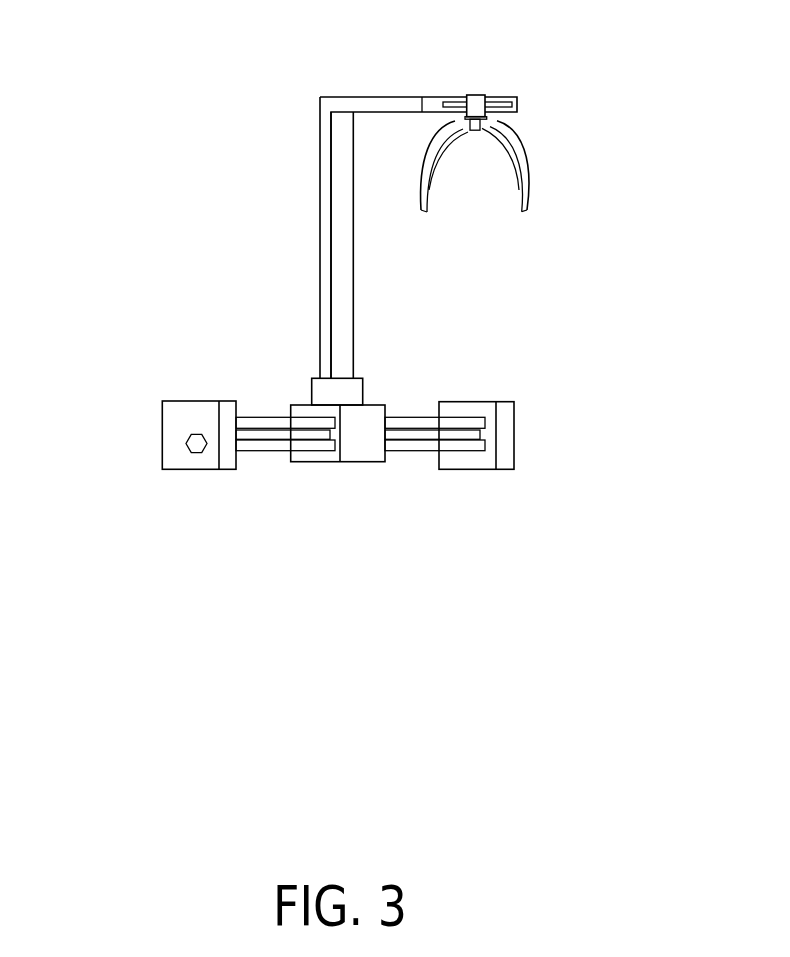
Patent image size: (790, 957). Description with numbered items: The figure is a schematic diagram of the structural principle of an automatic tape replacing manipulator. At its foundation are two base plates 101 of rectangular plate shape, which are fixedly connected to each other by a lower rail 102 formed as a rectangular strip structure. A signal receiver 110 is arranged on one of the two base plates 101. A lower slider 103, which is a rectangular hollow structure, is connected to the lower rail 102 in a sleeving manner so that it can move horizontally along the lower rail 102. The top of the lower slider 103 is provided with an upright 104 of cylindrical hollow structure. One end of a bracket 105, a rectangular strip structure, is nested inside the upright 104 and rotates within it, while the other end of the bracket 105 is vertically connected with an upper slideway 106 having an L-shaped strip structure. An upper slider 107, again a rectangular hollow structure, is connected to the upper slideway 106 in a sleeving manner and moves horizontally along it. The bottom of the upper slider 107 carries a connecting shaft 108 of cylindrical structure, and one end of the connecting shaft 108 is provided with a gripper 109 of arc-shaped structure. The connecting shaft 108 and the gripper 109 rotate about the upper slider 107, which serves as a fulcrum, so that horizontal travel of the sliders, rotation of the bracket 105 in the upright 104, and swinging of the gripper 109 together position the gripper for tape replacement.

The base plate 101 is at (174, 431).
The lower rail 102 is at (418, 423).
The lower slider 103 is at (373, 422).
The upright 104 is at (325, 392).
The bracket 105 is at (342, 313).
The upper slideway 106 is at (343, 111).
The upper slider 107 is at (477, 105).
The connecting shaft 108 is at (464, 126).
The gripper 109 is at (432, 170).
The signal receiver 110 is at (198, 448).